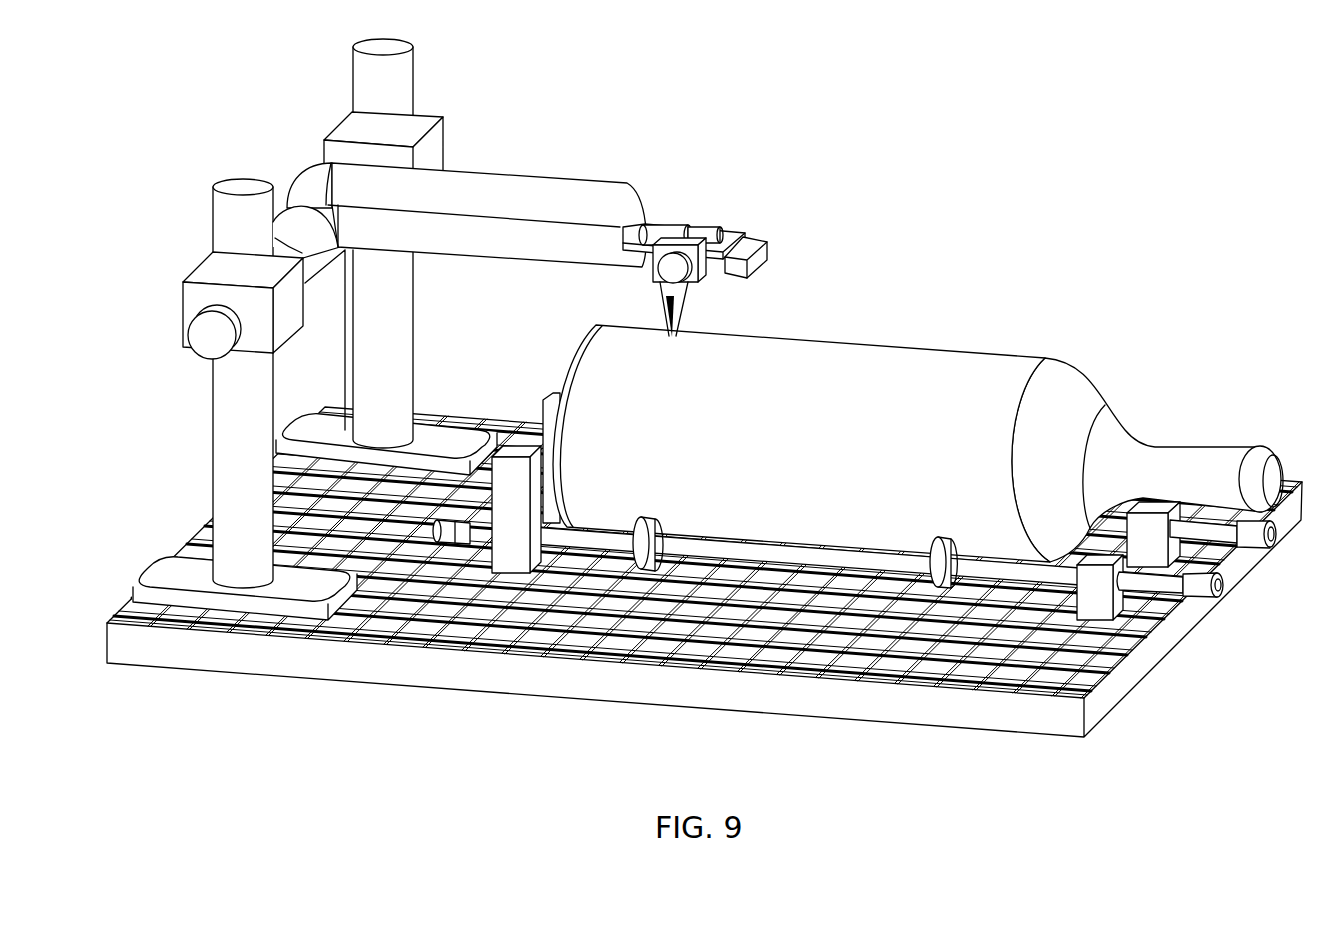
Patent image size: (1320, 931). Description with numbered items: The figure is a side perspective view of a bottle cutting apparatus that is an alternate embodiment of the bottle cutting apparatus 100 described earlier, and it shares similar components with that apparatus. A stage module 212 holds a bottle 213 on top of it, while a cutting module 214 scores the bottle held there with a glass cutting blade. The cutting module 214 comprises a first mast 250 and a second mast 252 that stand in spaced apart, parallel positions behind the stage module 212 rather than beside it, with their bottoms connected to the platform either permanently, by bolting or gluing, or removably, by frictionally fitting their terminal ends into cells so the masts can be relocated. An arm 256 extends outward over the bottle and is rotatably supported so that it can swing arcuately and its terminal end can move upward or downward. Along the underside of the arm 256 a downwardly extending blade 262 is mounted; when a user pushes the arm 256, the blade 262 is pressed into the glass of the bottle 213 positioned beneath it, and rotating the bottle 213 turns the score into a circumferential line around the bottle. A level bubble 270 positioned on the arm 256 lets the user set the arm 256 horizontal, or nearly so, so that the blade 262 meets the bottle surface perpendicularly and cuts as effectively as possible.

The bottle cutting apparatus 100 is at (163, 133).
The stage module 212 is at (1141, 704).
The bottle 213 is at (1017, 368).
The cutting module 214 is at (158, 304).
The first mast 250 is at (235, 487).
The second mast 252 is at (360, 77).
The arm 256 is at (500, 190).
The blade 262 is at (680, 345).
The level bubble 270 is at (666, 232).